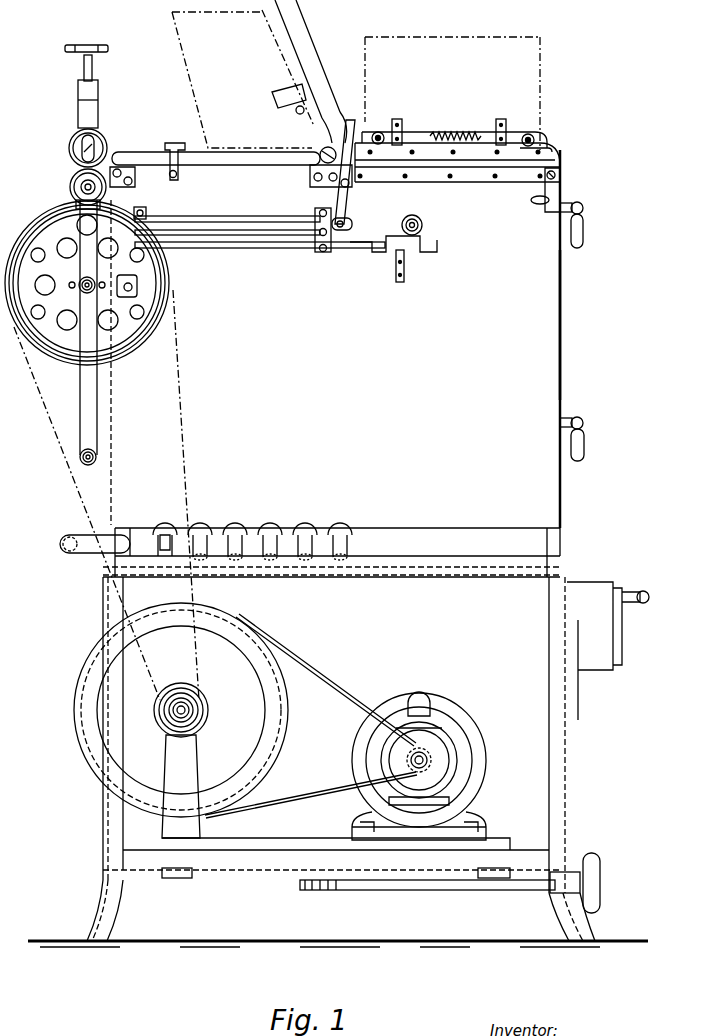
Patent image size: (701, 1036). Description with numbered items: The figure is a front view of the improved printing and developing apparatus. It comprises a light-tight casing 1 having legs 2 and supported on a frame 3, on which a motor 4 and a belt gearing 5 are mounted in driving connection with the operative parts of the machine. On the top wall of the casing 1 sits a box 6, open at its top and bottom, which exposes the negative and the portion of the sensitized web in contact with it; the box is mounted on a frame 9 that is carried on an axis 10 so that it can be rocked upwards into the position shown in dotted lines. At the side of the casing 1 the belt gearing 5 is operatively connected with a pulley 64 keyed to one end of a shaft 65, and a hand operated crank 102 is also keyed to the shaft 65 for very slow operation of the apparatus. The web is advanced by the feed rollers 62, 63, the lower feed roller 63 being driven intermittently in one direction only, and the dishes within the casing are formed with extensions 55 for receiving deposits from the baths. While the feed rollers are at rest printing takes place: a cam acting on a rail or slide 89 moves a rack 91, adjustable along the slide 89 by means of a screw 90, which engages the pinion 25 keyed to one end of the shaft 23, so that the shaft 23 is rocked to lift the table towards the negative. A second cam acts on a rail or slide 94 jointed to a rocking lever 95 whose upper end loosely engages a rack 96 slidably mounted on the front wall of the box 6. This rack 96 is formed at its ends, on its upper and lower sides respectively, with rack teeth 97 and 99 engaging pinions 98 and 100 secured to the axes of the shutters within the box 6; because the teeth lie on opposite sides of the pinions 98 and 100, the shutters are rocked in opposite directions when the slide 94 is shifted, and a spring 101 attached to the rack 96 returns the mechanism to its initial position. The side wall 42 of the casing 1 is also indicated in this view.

The casing 1 is at (562, 372).
The legs 2 is at (120, 550).
The frame 3 is at (108, 817).
The motor 4 is at (465, 738).
The belt gearing 5 is at (270, 753).
The box 6 is at (188, 56).
The frame 9 is at (477, 152).
The axis 10 is at (322, 160).
The shaft 23 is at (420, 226).
The pinion 25 is at (415, 212).
The side wall 42 is at (562, 300).
The extensions 55 is at (245, 530).
The feed roller 62 is at (70, 150).
The lower feed roller 63 is at (70, 190).
The pulley 64 is at (150, 303).
The shaft 65 is at (80, 290).
The rail or slide 89 is at (265, 246).
The screw 90 is at (435, 253).
The rack 91 is at (392, 236).
The rail or slide 94 is at (250, 212).
The rocking lever 95 is at (344, 210).
The rack 96 is at (494, 130).
The rack teeth 97 is at (397, 119).
The pinion 98 is at (372, 134).
The rack teeth 99 is at (545, 144).
The pinion 100 is at (530, 133).
The spring 101 is at (452, 132).
The hand operated crank 102 is at (82, 400).